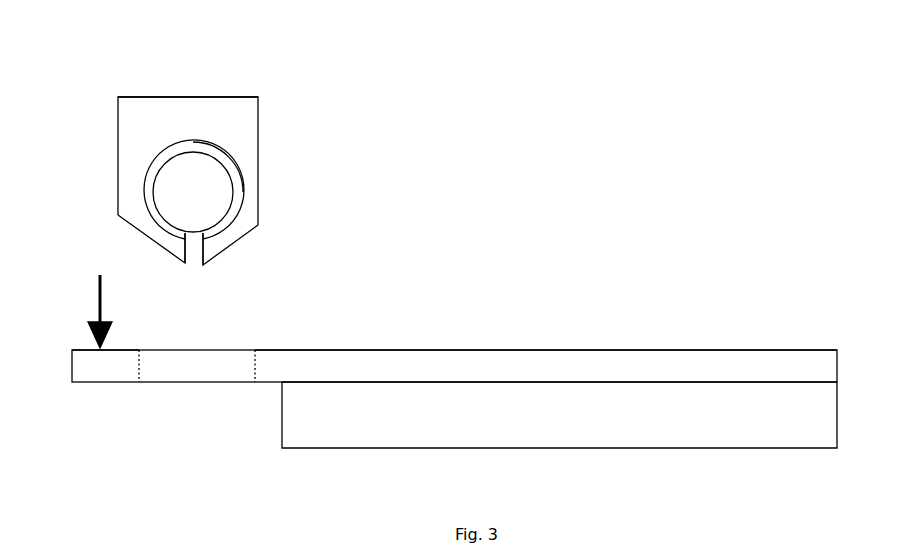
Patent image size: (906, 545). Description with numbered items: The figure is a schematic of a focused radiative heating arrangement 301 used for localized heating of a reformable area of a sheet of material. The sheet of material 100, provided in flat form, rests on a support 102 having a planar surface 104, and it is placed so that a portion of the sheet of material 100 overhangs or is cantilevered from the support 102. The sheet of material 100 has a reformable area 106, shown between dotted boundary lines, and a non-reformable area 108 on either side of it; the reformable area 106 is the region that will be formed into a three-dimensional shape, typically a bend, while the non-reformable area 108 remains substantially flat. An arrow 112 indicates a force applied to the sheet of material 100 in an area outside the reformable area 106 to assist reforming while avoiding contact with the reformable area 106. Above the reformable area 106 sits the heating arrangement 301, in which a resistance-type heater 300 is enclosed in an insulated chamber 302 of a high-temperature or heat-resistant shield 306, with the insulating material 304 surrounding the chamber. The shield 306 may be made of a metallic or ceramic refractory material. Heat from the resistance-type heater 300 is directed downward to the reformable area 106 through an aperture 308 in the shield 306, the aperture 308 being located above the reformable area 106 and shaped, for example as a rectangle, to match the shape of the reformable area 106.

The sheet of material 100 is at (548, 360).
The support 102 is at (545, 433).
The planar surface 104 is at (679, 380).
The reformable area 106 is at (238, 358).
The non-reformable area 108 is at (110, 372).
The force 112 is at (98, 313).
The resistance-type heater 300 is at (198, 172).
The focused radiative heating arrangement 301 is at (197, 80).
The insulated chamber 302 is at (187, 140).
The insulating material 304 is at (238, 178).
The heat-resistant shield 306 is at (152, 112).
The aperture 308 is at (201, 262).